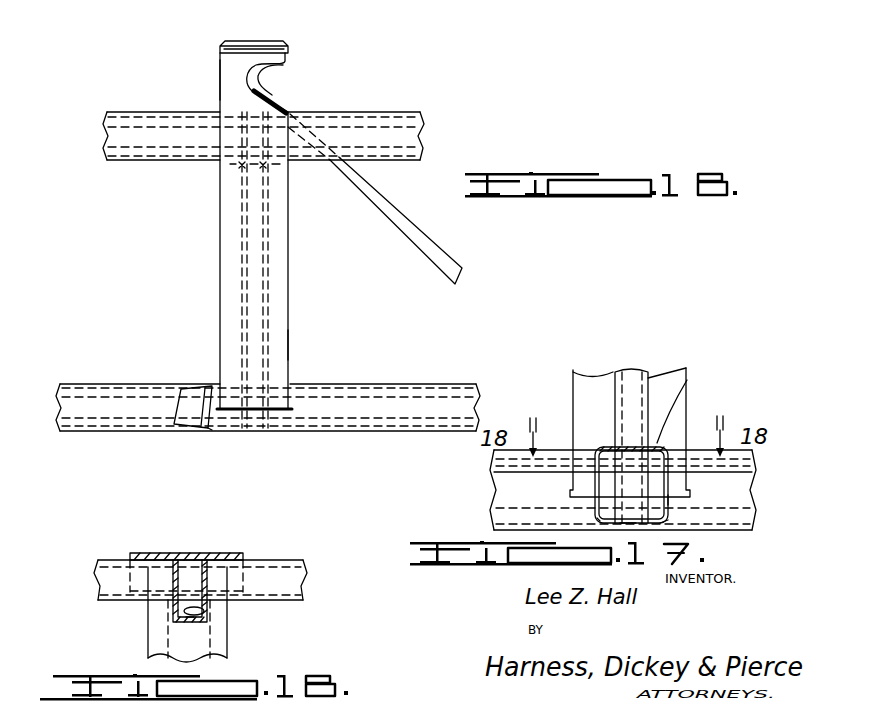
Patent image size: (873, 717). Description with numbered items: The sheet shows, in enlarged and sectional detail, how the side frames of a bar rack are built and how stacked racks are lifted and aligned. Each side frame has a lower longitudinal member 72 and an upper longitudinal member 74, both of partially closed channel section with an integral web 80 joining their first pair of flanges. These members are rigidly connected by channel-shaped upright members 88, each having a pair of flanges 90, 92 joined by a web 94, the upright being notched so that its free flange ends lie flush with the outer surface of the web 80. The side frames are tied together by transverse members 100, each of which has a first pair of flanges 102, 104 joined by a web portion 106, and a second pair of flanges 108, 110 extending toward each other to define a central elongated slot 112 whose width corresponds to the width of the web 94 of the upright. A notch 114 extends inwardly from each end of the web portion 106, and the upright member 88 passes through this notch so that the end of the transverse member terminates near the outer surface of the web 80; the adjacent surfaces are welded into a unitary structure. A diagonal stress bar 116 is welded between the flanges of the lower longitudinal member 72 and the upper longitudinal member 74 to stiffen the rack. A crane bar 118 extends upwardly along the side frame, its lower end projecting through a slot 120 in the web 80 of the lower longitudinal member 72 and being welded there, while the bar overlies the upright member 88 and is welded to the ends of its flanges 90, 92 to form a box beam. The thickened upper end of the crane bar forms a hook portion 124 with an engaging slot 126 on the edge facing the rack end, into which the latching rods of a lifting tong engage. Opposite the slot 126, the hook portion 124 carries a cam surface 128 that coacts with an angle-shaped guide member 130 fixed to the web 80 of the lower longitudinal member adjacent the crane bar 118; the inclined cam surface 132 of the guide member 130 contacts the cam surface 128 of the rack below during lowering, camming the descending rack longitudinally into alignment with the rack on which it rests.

In FIG. 16, the lower longitudinal member 72 is at (82, 384).
In FIG. 16, the upper longitudinal member 74 is at (392, 118).
In FIG. 18, the web 80 is at (285, 558).
In FIG. 16, the upright member 88 is at (265, 254).
In FIG. 17, the upright member 88 is at (648, 400).
In FIG. 18, the upright member 88 is at (173, 590).
In FIG. 18, the flange 90 is at (210, 568).
In FIG. 18, the flange 92 is at (172, 570).
In FIG. 18, the web 94 is at (190, 621).
In FIG. 16, the transverse member 100 is at (297, 346).
In FIG. 17, the transverse member 100 is at (500, 478).
In FIG. 17, the flange 102 is at (594, 503).
In FIG. 17, the flange 104 is at (677, 502).
In FIG. 17, the web portion 106 is at (687, 381).
In FIG. 17, the flange 108 is at (596, 525).
In FIG. 17, the flange 110 is at (667, 527).
In FIG. 17, the elongated slot 112 is at (628, 523).
In FIG. 18, the notch 114 is at (204, 612).
In FIG. 16, the stress bar 116 is at (432, 258).
In FIG. 16, the crane bar 118 is at (222, 228).
In FIG. 17, the crane bar 118 is at (573, 372).
In FIG. 18, the crane bar 118 is at (229, 552).
In FIG. 16, the slot 120 is at (292, 408).
In FIG. 16, the hook portion 124 is at (272, 99).
In FIG. 16, the engaging slot 126 is at (283, 67).
In FIG. 16, the cam surface 128 is at (218, 78).
In FIG. 16, the guide member 130 is at (192, 387).
In FIG. 16, the cam surface 132 is at (212, 426).